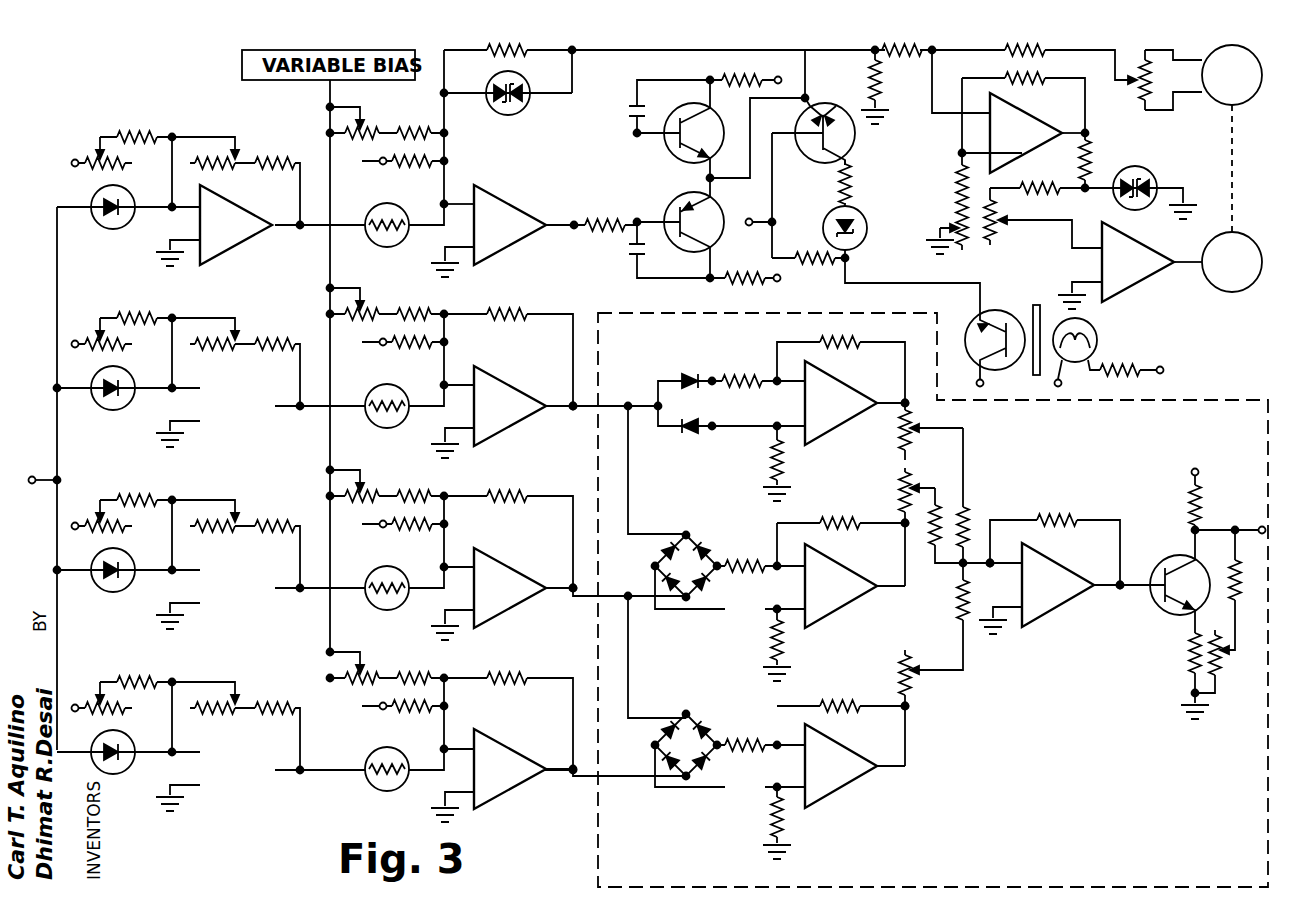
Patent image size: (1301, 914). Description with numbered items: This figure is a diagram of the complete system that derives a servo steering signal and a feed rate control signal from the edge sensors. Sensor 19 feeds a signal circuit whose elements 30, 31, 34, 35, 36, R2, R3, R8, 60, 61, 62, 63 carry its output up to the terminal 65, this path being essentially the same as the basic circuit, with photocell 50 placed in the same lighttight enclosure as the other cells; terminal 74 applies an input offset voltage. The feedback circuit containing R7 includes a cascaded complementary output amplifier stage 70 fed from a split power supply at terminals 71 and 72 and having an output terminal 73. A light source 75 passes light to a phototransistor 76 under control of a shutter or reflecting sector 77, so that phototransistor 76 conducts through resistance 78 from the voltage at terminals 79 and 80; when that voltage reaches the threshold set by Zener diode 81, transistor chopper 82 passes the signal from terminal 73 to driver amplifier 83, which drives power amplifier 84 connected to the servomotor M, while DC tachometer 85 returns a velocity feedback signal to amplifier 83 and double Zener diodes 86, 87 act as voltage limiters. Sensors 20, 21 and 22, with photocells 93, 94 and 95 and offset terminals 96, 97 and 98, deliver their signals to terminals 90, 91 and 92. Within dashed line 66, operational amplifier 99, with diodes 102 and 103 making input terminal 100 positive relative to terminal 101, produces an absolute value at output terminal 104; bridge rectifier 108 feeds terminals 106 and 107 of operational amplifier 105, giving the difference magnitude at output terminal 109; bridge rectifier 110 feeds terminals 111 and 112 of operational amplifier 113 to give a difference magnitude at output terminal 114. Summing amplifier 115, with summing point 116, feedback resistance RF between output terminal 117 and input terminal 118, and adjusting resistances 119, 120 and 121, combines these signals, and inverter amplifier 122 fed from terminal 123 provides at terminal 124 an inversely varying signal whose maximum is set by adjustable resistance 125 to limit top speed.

The sensor 19 is at (100, 225).
The sensor 20 is at (113, 410).
The sensor 21 is at (113, 592).
The sensor 22 is at (128, 770).
The operational amplifier 30 is at (232, 210).
The amplifier output 31 is at (300, 228).
The potentiometer 34 is at (73, 705).
The common terminal 35 is at (32, 476).
The junction 36 is at (175, 134).
The feedback resistor R2 is at (233, 158).
The input resistor R3 is at (140, 130).
The feedback circuit resistance R7 is at (520, 45).
The bias potentiometer R8 is at (372, 128).
The cell 50 is at (395, 203).
The operational amplifier 60 is at (505, 215).
The junction 61 is at (448, 133).
The bias junction 62 is at (325, 105).
The amplifier input junction 63 is at (448, 202).
The terminal 65 is at (574, 229).
The dashed line 66 is at (1178, 398).
The cascaded complementary output amplifier stage 70 is at (649, 191).
The terminal 71 is at (780, 76).
The terminal 72 is at (780, 281).
The output terminal 73 is at (808, 95).
The terminal 74 is at (394, 162).
The light source 75 is at (1098, 340).
The phototransistor 76 is at (968, 318).
The shutter or reflecting sector 77 is at (1036, 303).
The resistance 78 is at (805, 252).
The terminal 79 is at (748, 217).
The terminal 80 is at (976, 383).
The Zener diode 81 is at (862, 215).
The integrated transistor chopper 82 is at (850, 148).
The driver amplifier 83 is at (1020, 118).
The power amplifier 84 is at (1120, 250).
The DC tachometer 85 is at (1240, 50).
The double Zener diode 86 is at (512, 115).
The double Zener diode 87 is at (1148, 168).
The terminal 90 is at (573, 410).
The terminal 91 is at (570, 592).
The terminal 92 is at (570, 773).
The photocell 93 is at (410, 375).
The photocell 94 is at (410, 557).
The photocell 95 is at (410, 738).
The terminal 96 is at (393, 343).
The terminal 97 is at (393, 525).
The terminal 98 is at (393, 707).
The operational amplifier 99 is at (838, 395).
The input terminal 100 is at (712, 378).
The input terminal 101 is at (712, 423).
The diode 102 is at (688, 372).
The diode 103 is at (690, 433).
The output terminal 104 is at (908, 406).
The operational amplifier 105 is at (840, 578).
The input terminal 106 is at (720, 564).
The input terminal 107 is at (652, 566).
The bridge rectifier 108 is at (708, 546).
The output terminal 109 is at (902, 527).
The bridge rectifier 110 is at (698, 724).
The input terminal 111 is at (720, 743).
The input terminal 112 is at (652, 745).
The operational amplifier 113 is at (838, 758).
The output terminal 114 is at (908, 709).
The operational amplifier 115 is at (1055, 575).
The summing point 116 is at (960, 567).
The output terminal 117 is at (1120, 589).
The input terminal 118 is at (992, 567).
The resistance 119 is at (898, 440).
The resistance 120 is at (898, 482).
The resistance 121 is at (898, 670).
The inverter amplifier 122 is at (1175, 622).
The terminal 123 is at (1192, 468).
The terminal 124 is at (1258, 525).
The adjustable resistance 125 is at (1222, 675).
The feedback resistance RF is at (1070, 514).